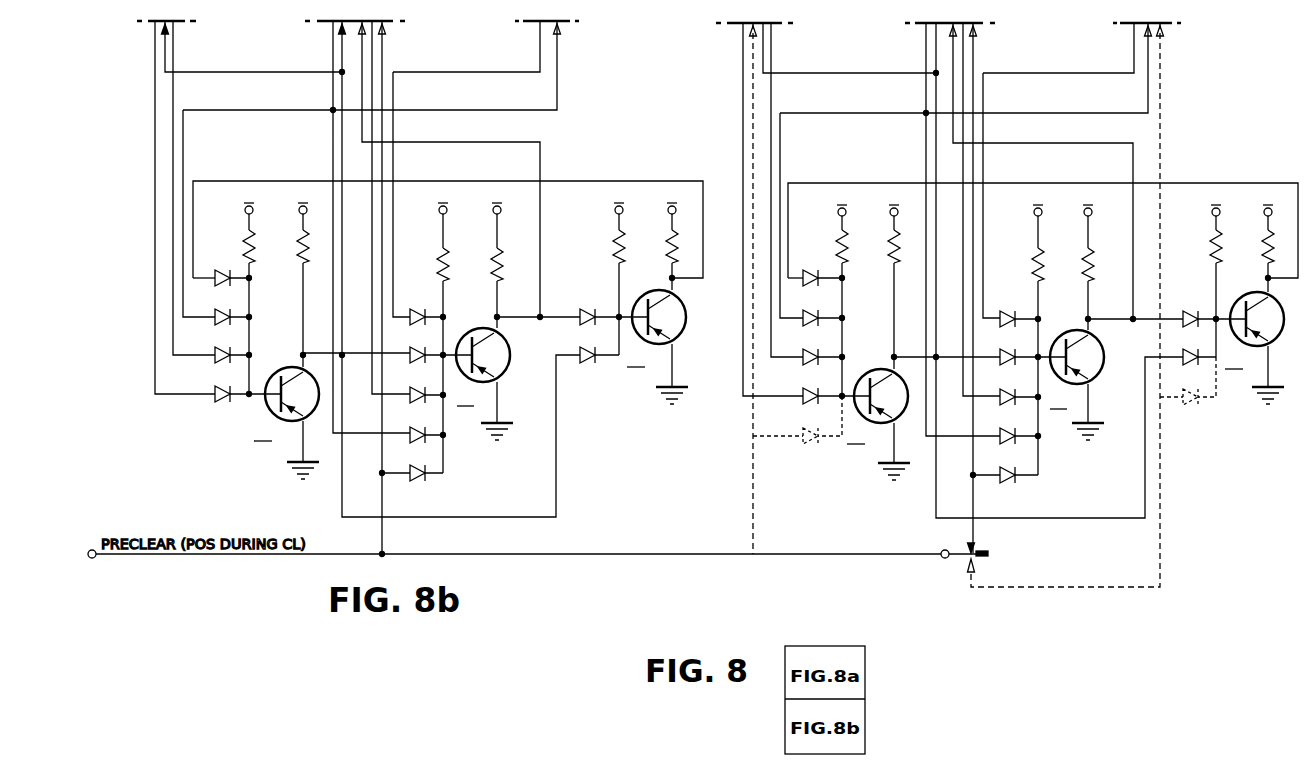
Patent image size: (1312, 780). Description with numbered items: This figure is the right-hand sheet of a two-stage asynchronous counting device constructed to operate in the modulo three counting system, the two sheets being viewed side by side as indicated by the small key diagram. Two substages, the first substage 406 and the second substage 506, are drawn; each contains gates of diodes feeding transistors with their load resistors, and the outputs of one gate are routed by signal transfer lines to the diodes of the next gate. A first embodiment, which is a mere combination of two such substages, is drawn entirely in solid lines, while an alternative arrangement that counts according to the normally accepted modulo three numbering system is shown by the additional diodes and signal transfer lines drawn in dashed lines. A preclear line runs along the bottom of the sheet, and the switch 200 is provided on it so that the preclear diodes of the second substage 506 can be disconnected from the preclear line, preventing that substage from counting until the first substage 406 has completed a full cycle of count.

The switch 200 is at (957, 565).
The substage SS406 406 is at (289, 166).
The substage SS506 506 is at (1086, 176).